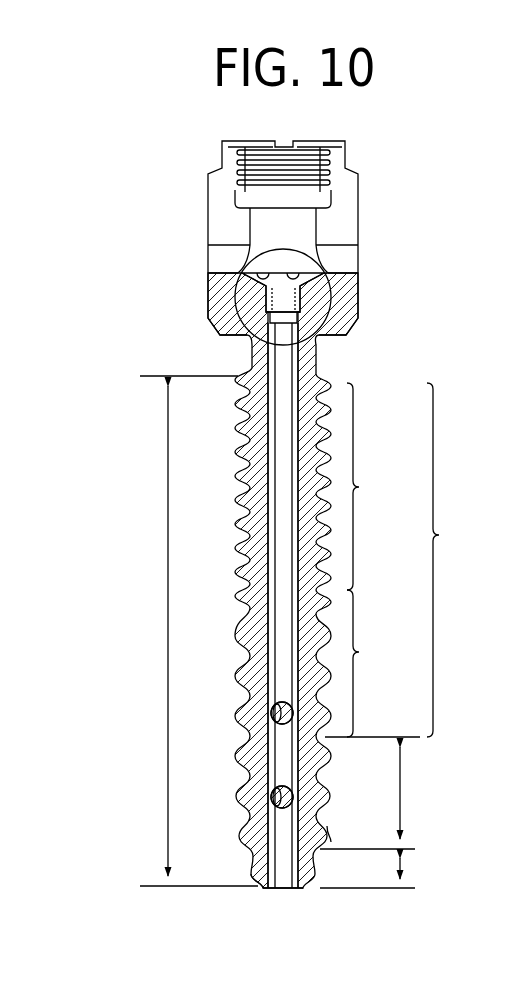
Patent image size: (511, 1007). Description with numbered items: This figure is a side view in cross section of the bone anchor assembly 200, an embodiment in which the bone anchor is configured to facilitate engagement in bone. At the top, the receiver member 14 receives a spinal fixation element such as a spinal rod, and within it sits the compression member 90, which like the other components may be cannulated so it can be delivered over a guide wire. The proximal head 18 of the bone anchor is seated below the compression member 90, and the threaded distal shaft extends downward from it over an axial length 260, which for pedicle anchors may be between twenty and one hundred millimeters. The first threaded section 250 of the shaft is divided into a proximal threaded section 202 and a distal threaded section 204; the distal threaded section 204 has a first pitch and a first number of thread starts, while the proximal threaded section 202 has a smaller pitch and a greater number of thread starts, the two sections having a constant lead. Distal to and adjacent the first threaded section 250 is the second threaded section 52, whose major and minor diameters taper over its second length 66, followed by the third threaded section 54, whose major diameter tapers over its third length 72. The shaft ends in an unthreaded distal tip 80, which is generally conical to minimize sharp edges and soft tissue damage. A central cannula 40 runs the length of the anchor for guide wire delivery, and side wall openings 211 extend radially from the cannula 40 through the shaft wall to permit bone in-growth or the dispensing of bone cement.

The bone anchor assembly 200 is at (313, 510).
The receiver member 14 is at (358, 205).
The compression member 90 is at (331, 273).
The proximal head 18 is at (357, 329).
The axial length 260 is at (168, 562).
The proximal threaded section 202 is at (376, 486).
The distal threaded section 204 is at (379, 663).
The first threaded section 250 is at (457, 560).
The side wall openings 211 is at (271, 797).
The second length 66 is at (410, 782).
The third length 72 is at (406, 870).
The second threaded section 52 is at (337, 831).
The third threaded section 54 is at (326, 879).
The cannula 40 is at (280, 876).
The unthreaded distal tip 80 is at (253, 882).